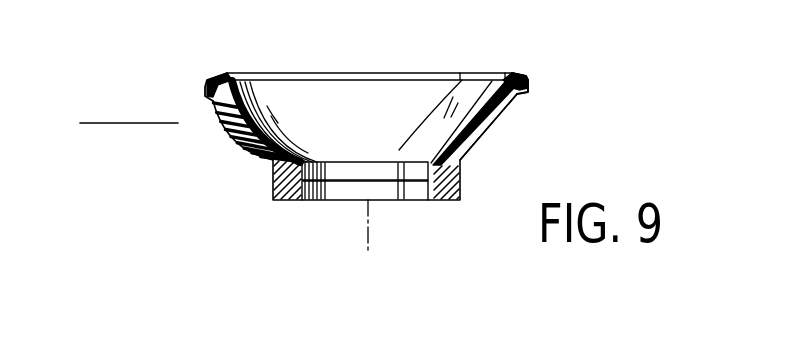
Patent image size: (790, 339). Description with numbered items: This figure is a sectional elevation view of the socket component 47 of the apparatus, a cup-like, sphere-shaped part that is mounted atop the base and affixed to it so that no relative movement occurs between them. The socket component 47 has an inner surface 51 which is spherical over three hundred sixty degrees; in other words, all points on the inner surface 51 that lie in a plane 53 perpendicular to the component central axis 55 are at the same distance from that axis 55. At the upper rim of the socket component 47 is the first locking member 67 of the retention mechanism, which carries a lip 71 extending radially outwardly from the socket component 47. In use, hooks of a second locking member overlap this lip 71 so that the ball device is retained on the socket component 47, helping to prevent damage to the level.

The socket component 47 is at (480, 148).
The inner surface 51 is at (353, 97).
The plane 53 is at (102, 123).
The component central axis 55 is at (368, 253).
The first locking member 67 is at (528, 78).
The lip 71 is at (210, 99).